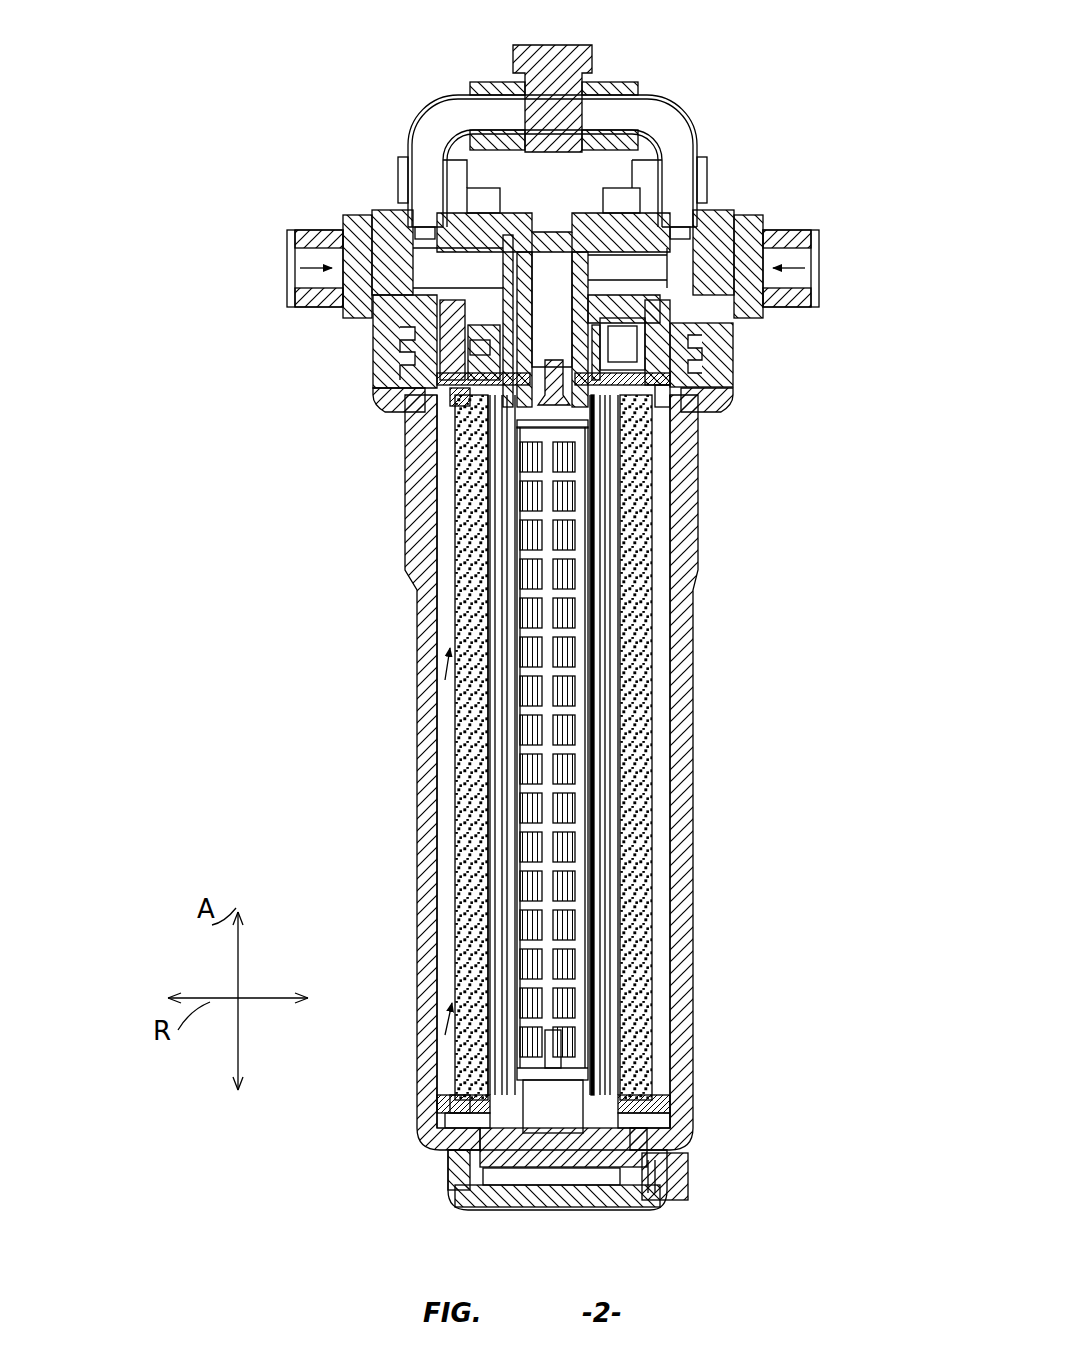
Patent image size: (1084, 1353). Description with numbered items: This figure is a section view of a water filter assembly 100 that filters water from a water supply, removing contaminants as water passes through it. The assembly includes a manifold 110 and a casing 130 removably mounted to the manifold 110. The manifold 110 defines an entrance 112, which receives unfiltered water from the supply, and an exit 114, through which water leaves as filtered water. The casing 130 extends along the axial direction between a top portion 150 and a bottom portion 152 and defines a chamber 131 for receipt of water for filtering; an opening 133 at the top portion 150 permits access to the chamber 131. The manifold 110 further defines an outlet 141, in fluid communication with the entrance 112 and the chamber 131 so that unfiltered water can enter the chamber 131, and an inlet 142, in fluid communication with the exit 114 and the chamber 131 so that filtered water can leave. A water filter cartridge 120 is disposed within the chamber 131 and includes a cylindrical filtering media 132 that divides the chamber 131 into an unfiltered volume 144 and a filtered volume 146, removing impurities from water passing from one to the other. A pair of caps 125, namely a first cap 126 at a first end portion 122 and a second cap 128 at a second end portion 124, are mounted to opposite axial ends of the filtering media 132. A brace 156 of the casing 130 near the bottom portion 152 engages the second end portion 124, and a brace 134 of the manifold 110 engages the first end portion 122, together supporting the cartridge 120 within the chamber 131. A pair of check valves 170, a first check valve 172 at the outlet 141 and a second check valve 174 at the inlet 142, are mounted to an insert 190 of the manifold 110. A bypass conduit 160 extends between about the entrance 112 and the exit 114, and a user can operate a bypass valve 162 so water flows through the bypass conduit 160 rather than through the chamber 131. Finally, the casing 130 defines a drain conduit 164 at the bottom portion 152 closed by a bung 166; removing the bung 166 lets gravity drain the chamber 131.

The water filter assembly 100 is at (325, 75).
The manifold 110 is at (728, 213).
The entrance 112 is at (312, 262).
The exit 114 is at (798, 262).
The water filter cartridge 120 is at (655, 786).
The first end portion 122 is at (667, 396).
The second end portion 124 is at (667, 1097).
The caps 125 is at (458, 404).
The first cap 126 is at (622, 403).
The second cap 128 is at (652, 1122).
The casing 130 is at (683, 666).
The chamber 131 is at (430, 686).
The filtering media 132 is at (475, 832).
The opening 133 is at (402, 330).
The brace 134 is at (528, 426).
The outlet 141 is at (448, 398).
The inlet 142 is at (562, 437).
The unfiltered volume 144 is at (452, 1012).
The filtered volume 146 is at (580, 1097).
The top portion 150 is at (745, 352).
The bottom portion 152 is at (700, 1138).
The brace 156 is at (555, 1032).
The bypass conduit 160 is at (432, 110).
The bypass valve 162 is at (553, 56).
The drain conduit 164 is at (592, 1182).
The bung 166 is at (682, 1181).
The check valves 170 is at (475, 381).
The first check valve 172 is at (437, 350).
The second check valve 174 is at (552, 358).
The insert 190 is at (690, 306).